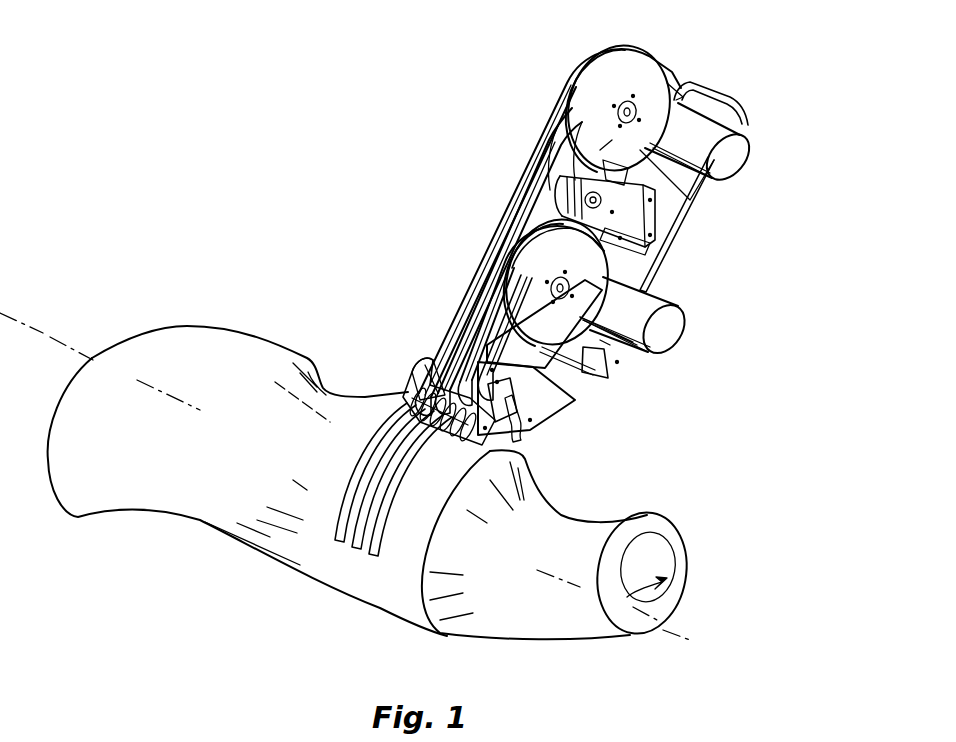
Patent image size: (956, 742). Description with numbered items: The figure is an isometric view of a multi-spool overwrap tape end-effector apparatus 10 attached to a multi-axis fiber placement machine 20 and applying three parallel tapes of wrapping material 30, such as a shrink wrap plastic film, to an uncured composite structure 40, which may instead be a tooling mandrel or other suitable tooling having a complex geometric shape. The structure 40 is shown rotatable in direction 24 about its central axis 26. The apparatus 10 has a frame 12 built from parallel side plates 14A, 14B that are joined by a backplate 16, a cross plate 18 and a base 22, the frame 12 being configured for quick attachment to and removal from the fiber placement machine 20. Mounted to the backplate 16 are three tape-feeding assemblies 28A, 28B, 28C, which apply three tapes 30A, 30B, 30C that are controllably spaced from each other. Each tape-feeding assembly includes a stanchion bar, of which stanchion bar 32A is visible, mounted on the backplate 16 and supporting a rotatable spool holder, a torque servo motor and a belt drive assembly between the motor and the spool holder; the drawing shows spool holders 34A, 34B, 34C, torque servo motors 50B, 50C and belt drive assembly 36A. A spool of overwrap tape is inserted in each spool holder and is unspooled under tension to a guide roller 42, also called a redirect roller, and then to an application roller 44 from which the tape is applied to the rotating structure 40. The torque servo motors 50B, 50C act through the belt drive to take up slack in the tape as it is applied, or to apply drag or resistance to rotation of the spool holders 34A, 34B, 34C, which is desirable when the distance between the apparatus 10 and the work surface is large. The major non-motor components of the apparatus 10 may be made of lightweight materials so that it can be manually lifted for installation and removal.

The overwrap tape end-effector apparatus 10 is at (312, 107).
The frame 12 is at (667, 227).
The side plate 14A is at (417, 373).
The side plate 14B is at (547, 365).
The backplate 16 is at (683, 187).
The cross plate 18 is at (527, 422).
The multi-axis fiber placement machine 20 is at (530, 425).
The base 22 is at (640, 347).
The direction of rotation 24 is at (625, 572).
The central axis 26 is at (43, 333).
The tape-feeding assembly 28A is at (493, 207).
The tape-feeding assembly 28B is at (567, 83).
The tape-feeding assembly 28C is at (477, 327).
The wrapping material 30 is at (372, 557).
The tape 30A is at (510, 192).
The tape 30B is at (563, 107).
The tape 30C is at (487, 317).
The stanchion bar 32A is at (640, 243).
The spool holder 34A is at (563, 163).
The spool holder 34B is at (620, 73).
The spool holder 34C is at (533, 265).
The belt drive assembly 36A is at (623, 210).
The uncured composite structure 40 is at (220, 347).
The guide roller 42 is at (430, 333).
The application roller 44 is at (407, 393).
The torque servo motor 50B is at (730, 153).
The torque servo motor 50C is at (660, 323).